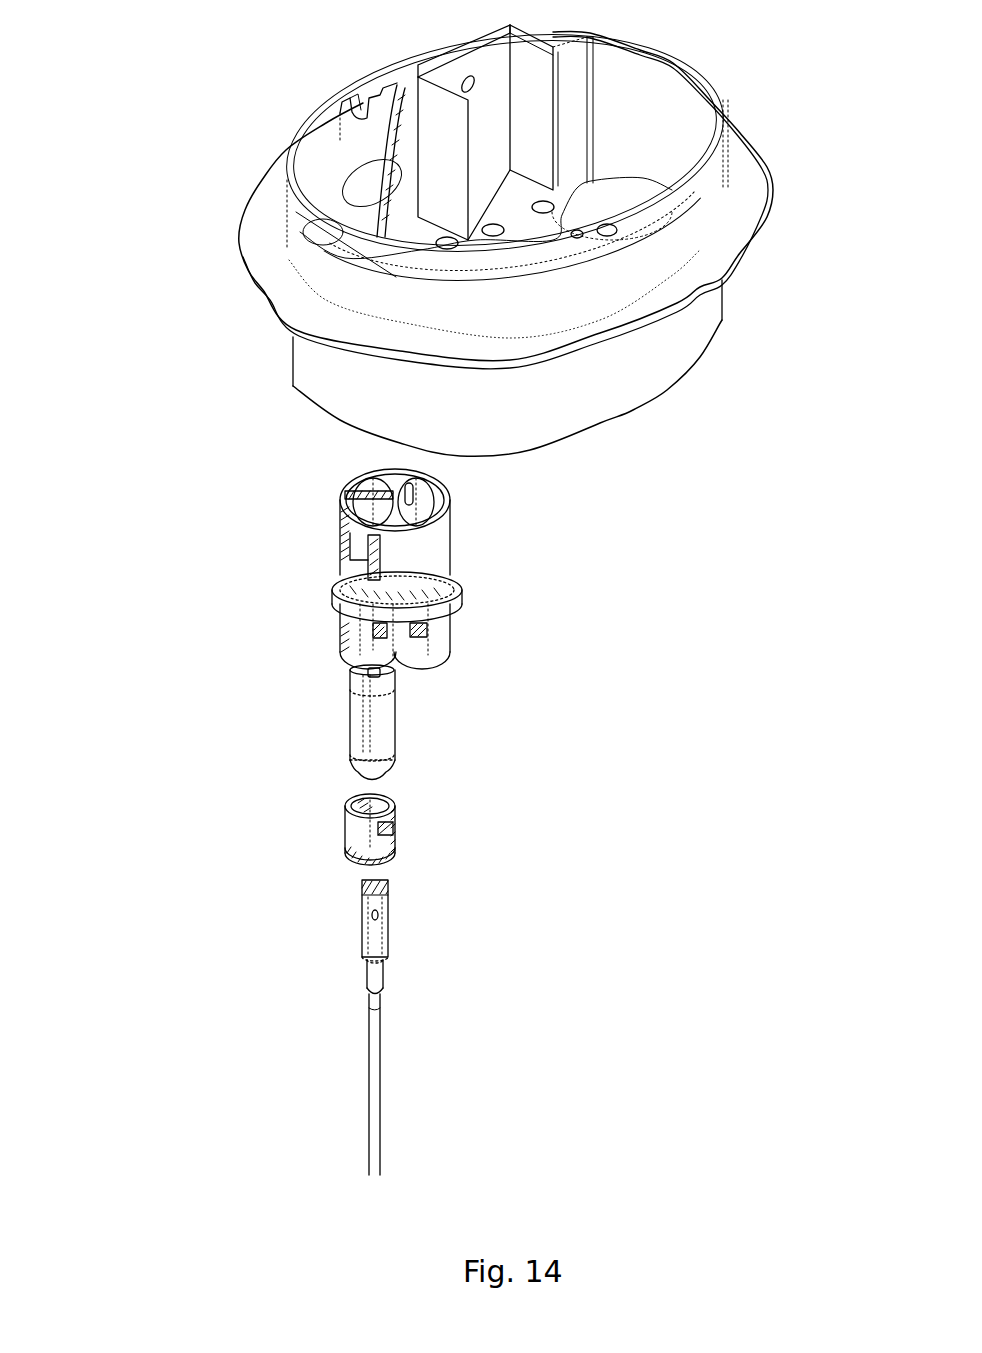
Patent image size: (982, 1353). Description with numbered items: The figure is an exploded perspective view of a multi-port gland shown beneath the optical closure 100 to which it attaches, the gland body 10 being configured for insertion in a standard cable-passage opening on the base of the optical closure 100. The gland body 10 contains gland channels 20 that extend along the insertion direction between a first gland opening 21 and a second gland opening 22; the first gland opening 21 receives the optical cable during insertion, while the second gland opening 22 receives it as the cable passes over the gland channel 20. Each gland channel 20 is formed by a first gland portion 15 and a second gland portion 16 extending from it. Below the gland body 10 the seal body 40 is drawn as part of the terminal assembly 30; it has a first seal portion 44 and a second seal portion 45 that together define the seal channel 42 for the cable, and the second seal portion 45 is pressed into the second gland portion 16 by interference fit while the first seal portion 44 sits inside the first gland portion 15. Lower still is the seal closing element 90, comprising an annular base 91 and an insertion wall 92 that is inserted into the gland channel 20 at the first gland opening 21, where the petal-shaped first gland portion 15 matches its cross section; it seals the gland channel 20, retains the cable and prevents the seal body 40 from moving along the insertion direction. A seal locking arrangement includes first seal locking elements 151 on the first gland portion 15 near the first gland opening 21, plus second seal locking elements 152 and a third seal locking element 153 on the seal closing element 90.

The optical closure 100 is at (298, 355).
The gland body 10 is at (338, 524).
The gland channel 20 is at (423, 510).
The second gland opening 22 is at (370, 501).
The second gland portion 16 is at (437, 537).
The first gland portion 15 is at (455, 622).
The first seal locking element 151 is at (425, 632).
The first gland opening 21 is at (410, 664).
The terminal assembly 30 is at (349, 878).
The seal channel 42 is at (352, 668).
The seal body 40 is at (350, 712).
The second seal portion 45 is at (403, 706).
The first seal portion 44 is at (398, 763).
The seal closing element 90 is at (325, 830).
The second seal locking element 152 is at (395, 822).
The third seal locking element 153 is at (343, 852).
The insertion wall 92 is at (397, 862).
The annular base 91 is at (358, 866).